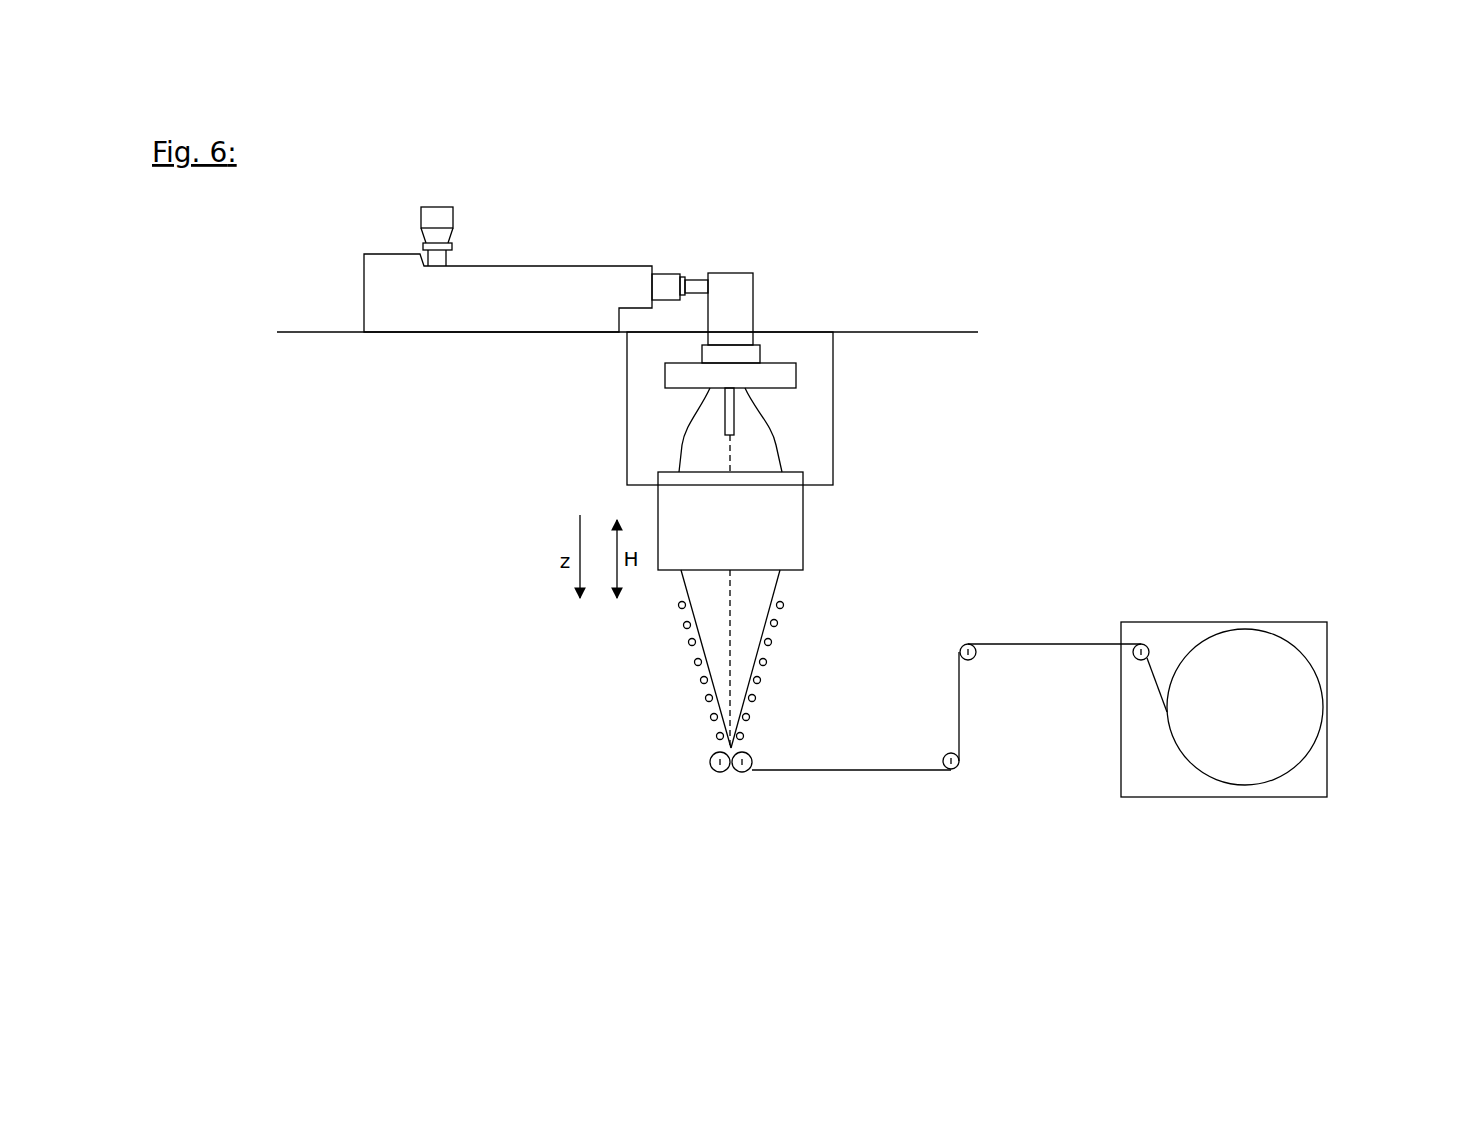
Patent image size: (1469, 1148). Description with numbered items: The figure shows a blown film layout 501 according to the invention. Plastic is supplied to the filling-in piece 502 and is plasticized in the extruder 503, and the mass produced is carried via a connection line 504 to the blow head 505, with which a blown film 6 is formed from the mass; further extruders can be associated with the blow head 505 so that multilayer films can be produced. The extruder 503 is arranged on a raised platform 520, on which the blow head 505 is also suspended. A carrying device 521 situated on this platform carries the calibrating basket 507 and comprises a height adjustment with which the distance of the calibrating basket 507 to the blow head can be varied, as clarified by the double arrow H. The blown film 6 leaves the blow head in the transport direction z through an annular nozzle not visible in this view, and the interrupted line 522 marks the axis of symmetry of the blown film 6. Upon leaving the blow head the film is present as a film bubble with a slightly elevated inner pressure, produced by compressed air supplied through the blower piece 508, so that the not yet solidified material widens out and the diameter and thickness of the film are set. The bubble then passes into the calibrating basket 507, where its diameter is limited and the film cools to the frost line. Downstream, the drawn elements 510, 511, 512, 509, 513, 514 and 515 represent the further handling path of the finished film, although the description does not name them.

The blown film layout 501 is at (503, 474).
The filling-in piece 502 is at (438, 217).
The extruder 503 is at (413, 318).
The connection line 504 is at (697, 283).
The blow head 505 is at (738, 303).
The blown film 6 is at (780, 448).
The calibrating basket 507 is at (793, 548).
The blower piece 508 is at (717, 417).
The film web 509 is at (803, 771).
The collapsing section 510 is at (680, 713).
The guide rollers 511 is at (705, 678).
The nip rollers 512 is at (740, 773).
The deflection rollers 513 is at (950, 769).
The winder 514 is at (1278, 603).
The film roll 515 is at (1283, 707).
The raised platform 520 is at (925, 330).
The carrying device 521 is at (627, 352).
The interrupted line 522 is at (732, 582).